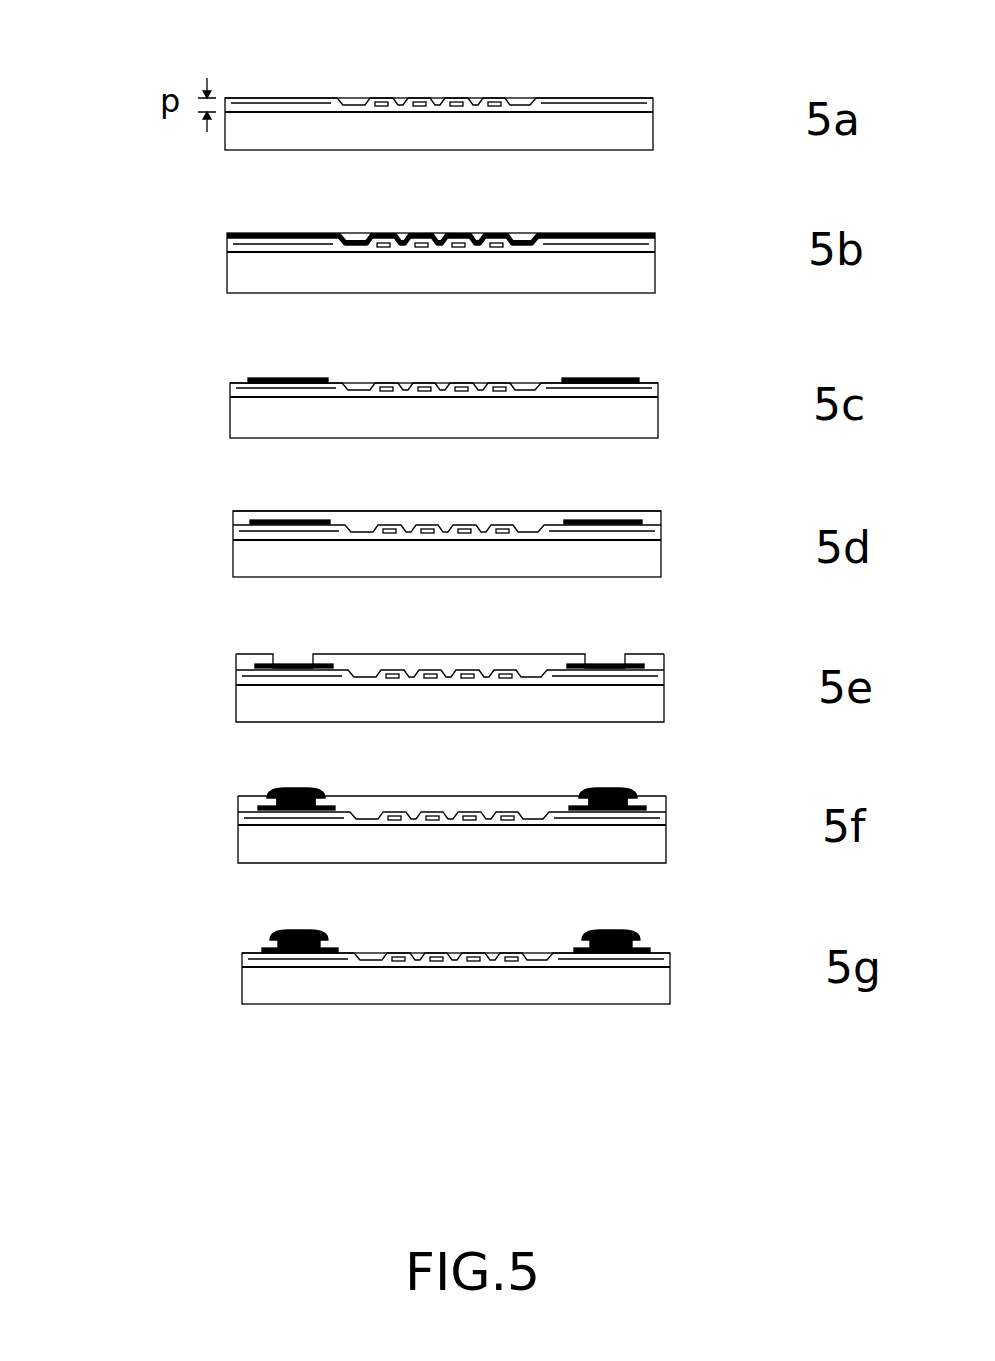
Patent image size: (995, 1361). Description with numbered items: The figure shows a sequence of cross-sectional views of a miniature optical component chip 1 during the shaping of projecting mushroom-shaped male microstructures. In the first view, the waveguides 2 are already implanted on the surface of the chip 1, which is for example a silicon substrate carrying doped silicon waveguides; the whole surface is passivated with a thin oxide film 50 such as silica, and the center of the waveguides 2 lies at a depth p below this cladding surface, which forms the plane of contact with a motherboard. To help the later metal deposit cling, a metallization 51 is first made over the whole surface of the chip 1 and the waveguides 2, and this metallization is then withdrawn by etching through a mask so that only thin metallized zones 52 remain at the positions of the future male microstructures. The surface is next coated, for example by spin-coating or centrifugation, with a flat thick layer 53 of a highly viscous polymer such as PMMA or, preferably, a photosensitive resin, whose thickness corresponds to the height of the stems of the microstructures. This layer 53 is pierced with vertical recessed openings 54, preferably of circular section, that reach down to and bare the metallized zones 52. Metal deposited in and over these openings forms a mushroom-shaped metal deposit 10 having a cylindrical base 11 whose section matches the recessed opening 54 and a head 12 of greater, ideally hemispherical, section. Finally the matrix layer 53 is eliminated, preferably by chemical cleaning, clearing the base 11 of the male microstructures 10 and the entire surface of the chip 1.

In FIG. 5a, the chip 1 is at (635, 135).
In FIG. 5b, the chip 1 is at (441, 263).
In FIG. 5c, the chip 1 is at (444, 410).
In FIG. 5d, the chip 1 is at (447, 544).
In FIG. 5e, the chip 1 is at (450, 688).
In FIG. 5f, the chip 1 is at (452, 829).
In FIG. 5g, the chip 1 is at (456, 978).
In FIG. 5a, the waveguides 2 is at (456, 100).
In FIG. 5b, the waveguides 2 is at (440, 245).
In FIG. 5c, the waveguides 2 is at (443, 389).
In FIG. 5d, the waveguides 2 is at (446, 531).
In FIG. 5e, the waveguides 2 is at (449, 676).
In FIG. 5f, the waveguides 2 is at (451, 818).
In FIG. 5g, the waveguides 2 is at (455, 959).
In FIG. 5a, the insulating layer 50 is at (303, 100).
In FIG. 5b, the insulating layer 50 is at (441, 241).
In FIG. 5c, the insulating layer 50 is at (444, 386).
In FIG. 5d, the insulating layer 50 is at (447, 528).
In FIG. 5e, the insulating layer 50 is at (450, 673).
In FIG. 5f, the insulating layer 50 is at (452, 815).
In FIG. 5g, the insulating layer 50 is at (456, 956).
In FIG. 5b, the metallization 51 is at (226, 237).
In FIG. 5c, the metallized zones 52 is at (265, 380).
In FIG. 5d, the metallized zones 52 is at (446, 522).
In FIG. 5e, the metallized zones 52 is at (449, 666).
In FIG. 5d, the thick layer 53 is at (232, 517).
In FIG. 5e, the recessed openings 54 is at (288, 660).
In FIG. 5f, the recessed openings 54 is at (452, 801).
In FIG. 5g, the mushroom-shaped metal deposit 10 is at (650, 940).
In FIG. 5f, the cylindrical base 11 is at (452, 808).
In FIG. 5g, the cylindrical base 11 is at (262, 946).
In FIG. 5f, the head 12 is at (452, 797).
In FIG. 5g, the head 12 is at (270, 935).